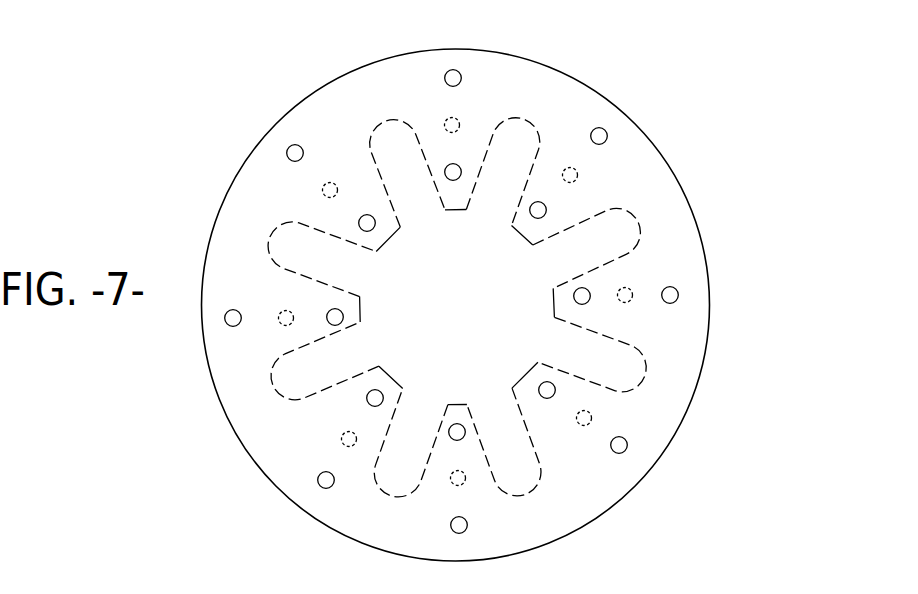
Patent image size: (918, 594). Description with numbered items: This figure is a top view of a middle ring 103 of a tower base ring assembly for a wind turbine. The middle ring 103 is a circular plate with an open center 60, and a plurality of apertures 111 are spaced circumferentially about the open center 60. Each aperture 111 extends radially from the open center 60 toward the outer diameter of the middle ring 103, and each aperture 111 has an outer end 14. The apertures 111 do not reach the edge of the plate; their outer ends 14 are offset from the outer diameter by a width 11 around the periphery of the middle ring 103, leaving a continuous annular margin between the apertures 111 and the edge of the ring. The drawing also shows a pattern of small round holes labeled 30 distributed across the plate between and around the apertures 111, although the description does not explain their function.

The width 11 is at (382, 118).
The outer end 14 is at (268, 238).
The apertures 30 is at (462, 120).
The open center 60 is at (468, 330).
The middle ring 103 is at (710, 157).
The aperture 111 is at (615, 372).